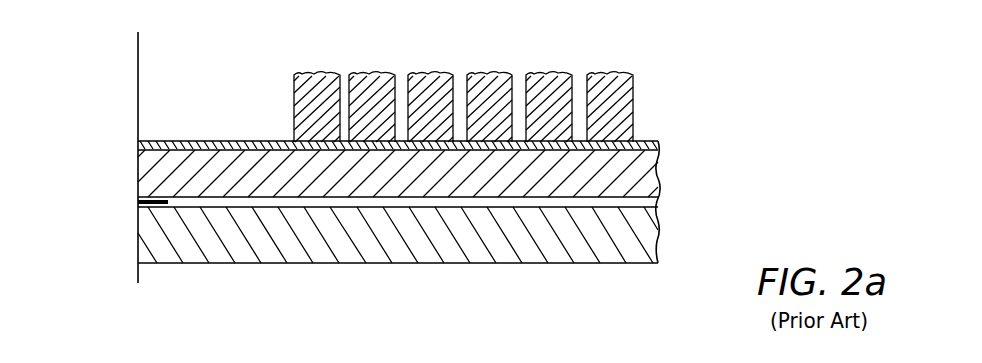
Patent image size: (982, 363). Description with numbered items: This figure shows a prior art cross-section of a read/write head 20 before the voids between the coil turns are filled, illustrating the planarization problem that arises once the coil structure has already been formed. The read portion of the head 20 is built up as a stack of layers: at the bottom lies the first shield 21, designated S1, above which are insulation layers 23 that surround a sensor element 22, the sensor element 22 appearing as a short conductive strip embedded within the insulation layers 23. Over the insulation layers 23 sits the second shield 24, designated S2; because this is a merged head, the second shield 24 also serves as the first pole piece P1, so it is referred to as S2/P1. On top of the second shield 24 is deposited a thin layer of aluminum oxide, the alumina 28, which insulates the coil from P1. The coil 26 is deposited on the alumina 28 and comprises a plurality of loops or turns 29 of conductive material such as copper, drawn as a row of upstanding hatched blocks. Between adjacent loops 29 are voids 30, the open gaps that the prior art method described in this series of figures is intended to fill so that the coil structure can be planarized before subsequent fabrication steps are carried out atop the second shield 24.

The head 20 is at (100, 127).
The first shield (S1) 21 is at (202, 258).
The sensor element 22 is at (138, 202).
The insulation layers 23 is at (181, 212).
The second shield (S2) / first pole piece (P1) 24 is at (652, 178).
The coil 26 is at (420, 79).
The alumina layer 28 is at (657, 141).
The loops or turns 29 is at (311, 72).
The voids 30 is at (402, 97).